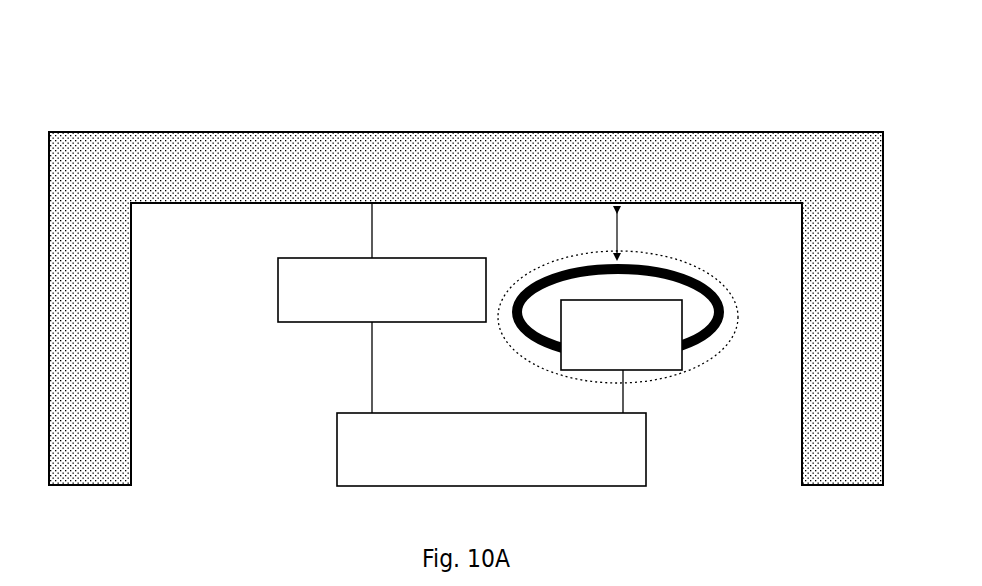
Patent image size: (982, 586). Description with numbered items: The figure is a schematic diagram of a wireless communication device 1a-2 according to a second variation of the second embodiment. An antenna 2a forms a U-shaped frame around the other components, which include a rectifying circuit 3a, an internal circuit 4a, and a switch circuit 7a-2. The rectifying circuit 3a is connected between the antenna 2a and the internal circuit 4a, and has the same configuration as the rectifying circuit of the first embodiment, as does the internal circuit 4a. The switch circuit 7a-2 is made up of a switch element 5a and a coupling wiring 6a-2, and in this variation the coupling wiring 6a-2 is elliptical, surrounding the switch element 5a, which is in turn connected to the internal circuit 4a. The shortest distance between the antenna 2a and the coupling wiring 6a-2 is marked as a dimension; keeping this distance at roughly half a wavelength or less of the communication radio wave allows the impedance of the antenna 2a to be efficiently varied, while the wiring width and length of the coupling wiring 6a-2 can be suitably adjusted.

The wireless communication device 1a-2 is at (470, 34).
The antenna 2a is at (78, 138).
The rectifying circuit 3a is at (278, 288).
The internal circuit 4a is at (337, 445).
The switch element 5a is at (560, 368).
The coupling wiring 6a-2 is at (692, 274).
The switch circuit 7a-2 is at (688, 372).